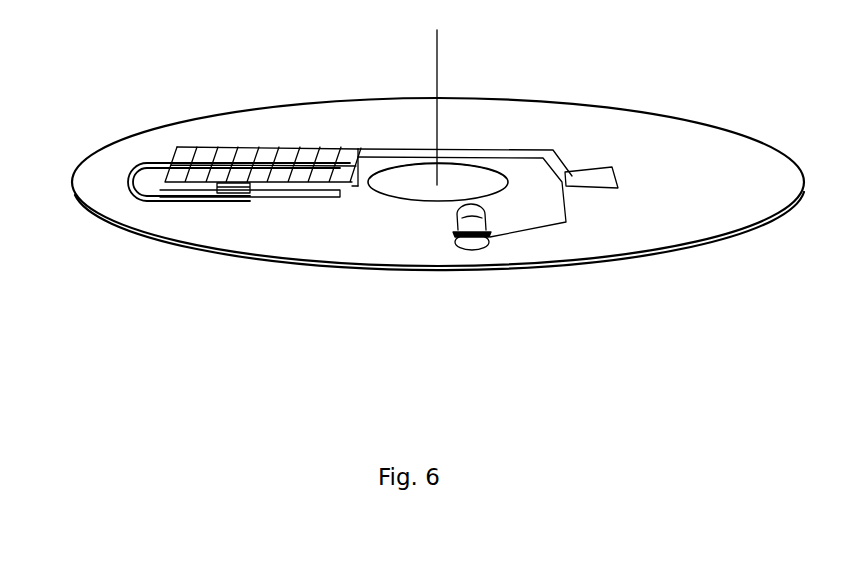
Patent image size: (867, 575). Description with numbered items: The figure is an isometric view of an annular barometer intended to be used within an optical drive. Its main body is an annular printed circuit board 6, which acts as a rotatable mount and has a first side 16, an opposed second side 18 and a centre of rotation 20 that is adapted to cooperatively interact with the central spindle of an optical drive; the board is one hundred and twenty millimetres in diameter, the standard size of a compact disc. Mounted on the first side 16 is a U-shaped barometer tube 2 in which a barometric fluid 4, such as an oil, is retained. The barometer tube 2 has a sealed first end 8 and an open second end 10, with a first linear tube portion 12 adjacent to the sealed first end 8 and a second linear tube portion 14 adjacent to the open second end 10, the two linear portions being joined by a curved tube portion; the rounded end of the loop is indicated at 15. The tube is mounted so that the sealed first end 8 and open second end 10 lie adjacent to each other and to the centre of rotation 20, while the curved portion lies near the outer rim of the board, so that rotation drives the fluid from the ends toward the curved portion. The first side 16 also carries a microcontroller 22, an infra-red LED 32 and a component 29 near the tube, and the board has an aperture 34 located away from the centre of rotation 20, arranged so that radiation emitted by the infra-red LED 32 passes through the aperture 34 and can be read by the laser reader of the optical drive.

The barometer tube 2 is at (205, 215).
The barometric fluid 4 is at (169, 167).
The annular printed circuit board 6 is at (132, 238).
The sealed first end 8 is at (349, 176).
The open second end 10 is at (347, 190).
The first linear tube portion 12 is at (238, 157).
The second linear tube portion 14 is at (290, 198).
The rounded end of loop 15 is at (131, 177).
The first side 16 is at (148, 138).
The second side 18 is at (697, 256).
The centre of rotation 20 is at (438, 100).
The microcontroller 22 is at (600, 177).
The connector 29 is at (237, 193).
The infra-red LED 32 is at (487, 222).
The aperture 34 is at (477, 243).